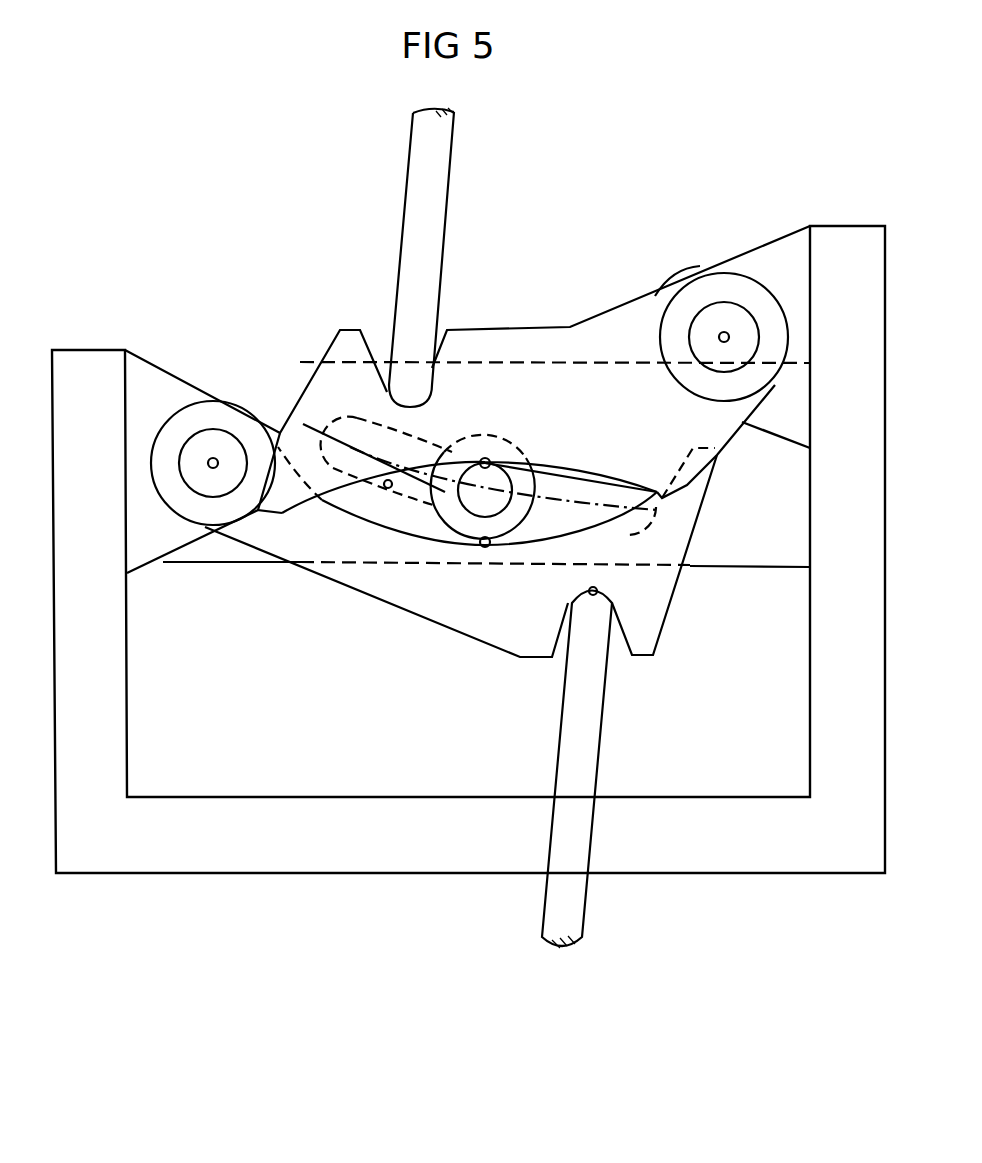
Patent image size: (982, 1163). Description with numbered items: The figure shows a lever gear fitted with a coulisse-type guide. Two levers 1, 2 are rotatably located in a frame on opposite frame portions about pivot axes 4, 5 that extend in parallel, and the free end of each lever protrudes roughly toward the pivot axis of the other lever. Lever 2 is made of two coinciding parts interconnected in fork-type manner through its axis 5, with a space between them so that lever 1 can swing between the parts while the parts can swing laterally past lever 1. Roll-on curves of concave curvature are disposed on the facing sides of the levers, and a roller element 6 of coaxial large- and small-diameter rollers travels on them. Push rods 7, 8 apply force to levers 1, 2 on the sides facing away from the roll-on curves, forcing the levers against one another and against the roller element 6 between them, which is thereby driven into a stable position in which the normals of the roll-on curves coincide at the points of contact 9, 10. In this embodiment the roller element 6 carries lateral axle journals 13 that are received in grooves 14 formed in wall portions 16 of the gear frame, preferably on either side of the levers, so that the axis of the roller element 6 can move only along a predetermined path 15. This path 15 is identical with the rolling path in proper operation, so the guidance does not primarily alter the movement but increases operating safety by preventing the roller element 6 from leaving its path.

The lever 1 is at (655, 613).
The lever 2 is at (618, 325).
The pivot axis 4 is at (213, 458).
The pivot axis 5 is at (723, 332).
The roller element 6 is at (497, 540).
The push rod 7 is at (576, 905).
The push rod 8 is at (438, 184).
The point of contact 9 is at (483, 547).
The point of contact 10 is at (487, 458).
The axle journal 13 is at (500, 485).
The groove 14 is at (384, 489).
The path 15 is at (357, 412).
The wall portion 16 is at (757, 550).